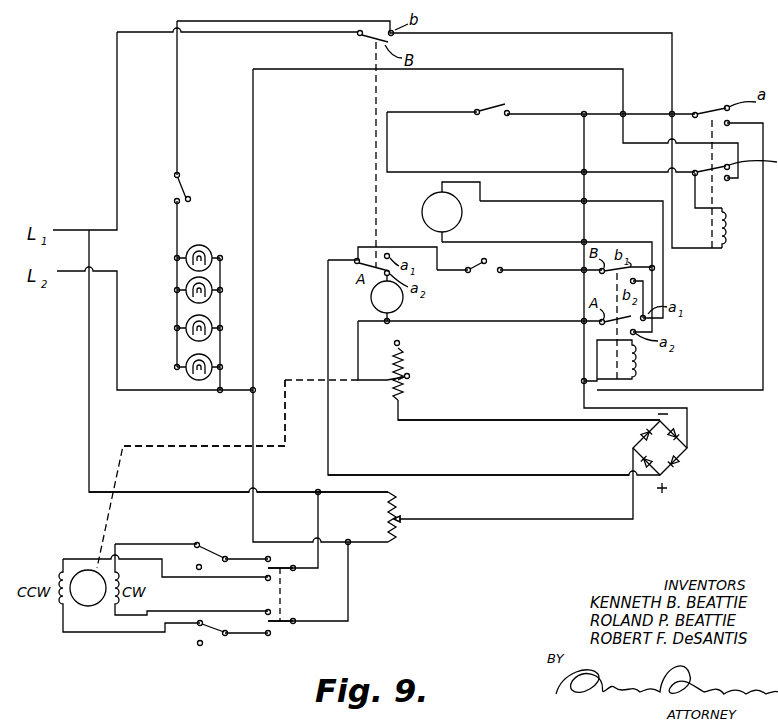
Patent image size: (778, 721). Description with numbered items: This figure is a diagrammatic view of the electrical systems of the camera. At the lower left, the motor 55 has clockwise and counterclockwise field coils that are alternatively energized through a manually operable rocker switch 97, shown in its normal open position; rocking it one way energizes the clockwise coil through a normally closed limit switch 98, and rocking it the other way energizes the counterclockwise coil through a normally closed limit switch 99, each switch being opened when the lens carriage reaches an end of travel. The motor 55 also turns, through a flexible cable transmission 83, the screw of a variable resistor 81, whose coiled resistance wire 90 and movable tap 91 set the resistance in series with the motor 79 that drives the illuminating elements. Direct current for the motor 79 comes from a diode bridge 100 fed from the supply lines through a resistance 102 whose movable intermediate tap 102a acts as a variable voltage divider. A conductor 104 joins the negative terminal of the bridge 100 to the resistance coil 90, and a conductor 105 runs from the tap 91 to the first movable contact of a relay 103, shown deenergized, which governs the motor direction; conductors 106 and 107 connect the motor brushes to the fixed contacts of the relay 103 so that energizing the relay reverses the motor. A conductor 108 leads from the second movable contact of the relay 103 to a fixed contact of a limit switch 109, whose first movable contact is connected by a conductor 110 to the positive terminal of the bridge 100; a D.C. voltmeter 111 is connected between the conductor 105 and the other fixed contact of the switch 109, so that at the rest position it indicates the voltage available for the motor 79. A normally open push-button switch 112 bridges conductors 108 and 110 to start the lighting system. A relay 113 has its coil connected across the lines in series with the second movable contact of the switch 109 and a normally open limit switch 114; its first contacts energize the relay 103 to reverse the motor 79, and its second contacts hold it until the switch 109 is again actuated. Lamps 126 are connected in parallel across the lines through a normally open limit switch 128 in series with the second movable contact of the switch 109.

The motor 55 is at (80, 603).
The motor 79 is at (462, 218).
The variable resistor 81 is at (410, 374).
The flexible cable transmission 83 is at (191, 445).
The coiled resistance wire 90 is at (399, 342).
The movable tap 91 is at (400, 379).
The rocker switch 97 is at (290, 600).
The limit switch 98 is at (212, 553).
The limit switch 99 is at (207, 638).
The diode bridge 100 is at (689, 462).
The resistance 102 is at (398, 503).
The movable intermediate tap 102a is at (401, 521).
The relay 103 is at (642, 367).
The conductor 104 is at (550, 425).
The conductor 105 is at (482, 322).
The conductor 106 is at (614, 199).
The conductor 107 is at (610, 242).
The conductor 108 is at (528, 271).
The limit switch 109 is at (355, 48).
The conductor 110 is at (479, 475).
The D.C. voltmeter 111 is at (404, 298).
The push-button switch 112 is at (494, 258).
The relay 113 is at (737, 242).
The limit switch 114 is at (490, 109).
The lamps 126 is at (206, 246).
The limit switch 128 is at (183, 189).